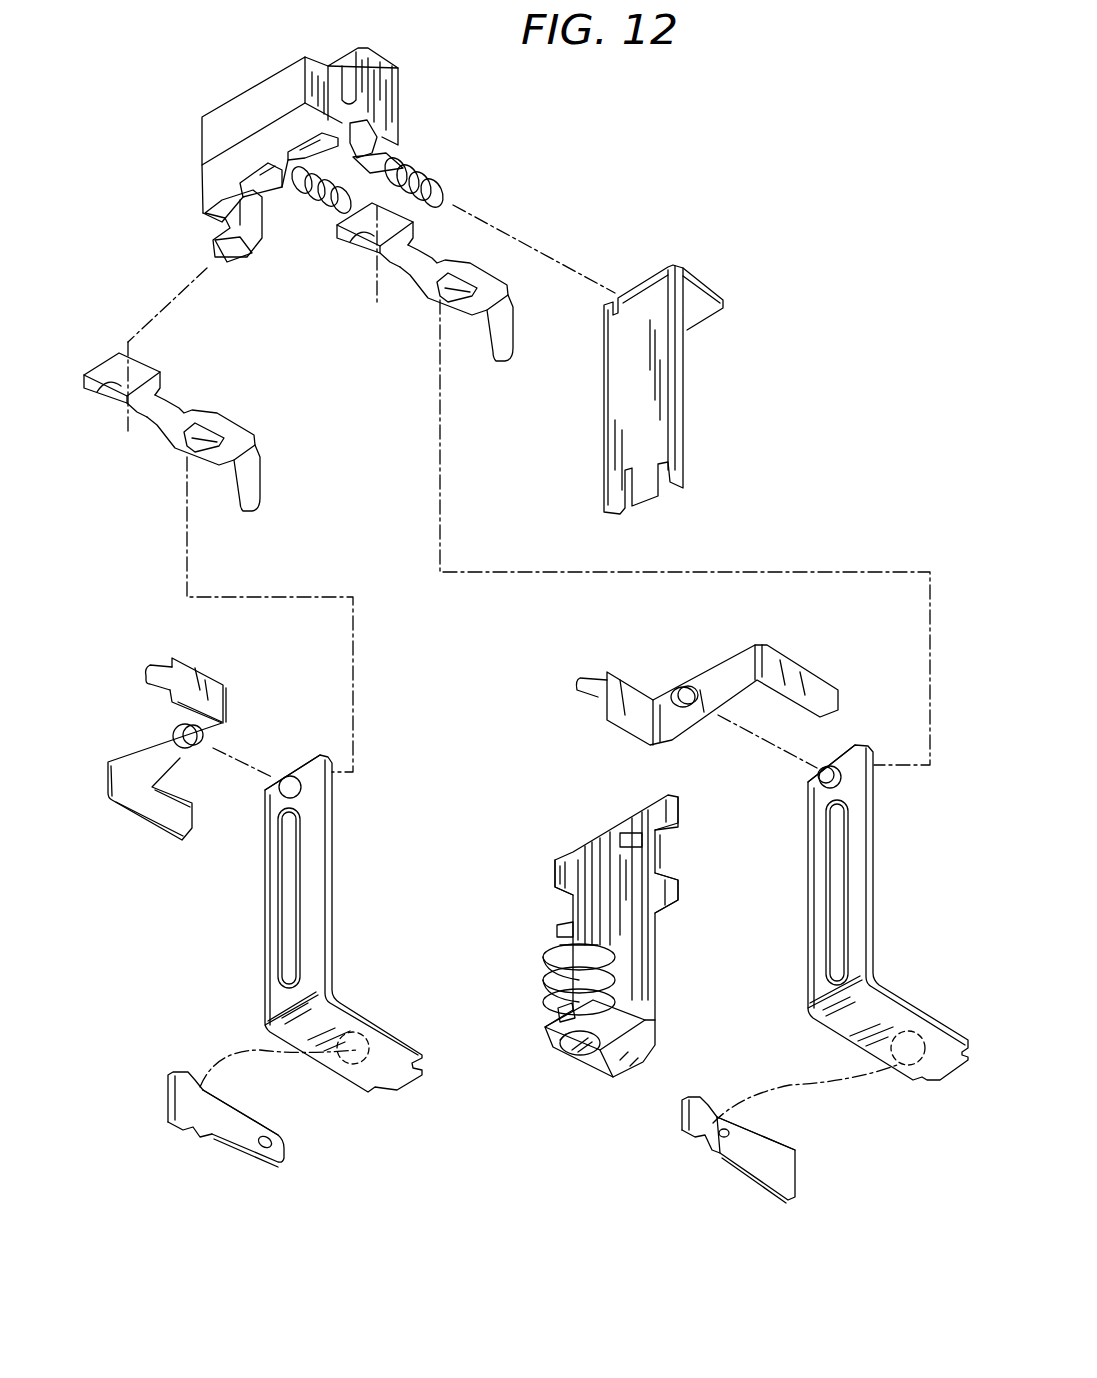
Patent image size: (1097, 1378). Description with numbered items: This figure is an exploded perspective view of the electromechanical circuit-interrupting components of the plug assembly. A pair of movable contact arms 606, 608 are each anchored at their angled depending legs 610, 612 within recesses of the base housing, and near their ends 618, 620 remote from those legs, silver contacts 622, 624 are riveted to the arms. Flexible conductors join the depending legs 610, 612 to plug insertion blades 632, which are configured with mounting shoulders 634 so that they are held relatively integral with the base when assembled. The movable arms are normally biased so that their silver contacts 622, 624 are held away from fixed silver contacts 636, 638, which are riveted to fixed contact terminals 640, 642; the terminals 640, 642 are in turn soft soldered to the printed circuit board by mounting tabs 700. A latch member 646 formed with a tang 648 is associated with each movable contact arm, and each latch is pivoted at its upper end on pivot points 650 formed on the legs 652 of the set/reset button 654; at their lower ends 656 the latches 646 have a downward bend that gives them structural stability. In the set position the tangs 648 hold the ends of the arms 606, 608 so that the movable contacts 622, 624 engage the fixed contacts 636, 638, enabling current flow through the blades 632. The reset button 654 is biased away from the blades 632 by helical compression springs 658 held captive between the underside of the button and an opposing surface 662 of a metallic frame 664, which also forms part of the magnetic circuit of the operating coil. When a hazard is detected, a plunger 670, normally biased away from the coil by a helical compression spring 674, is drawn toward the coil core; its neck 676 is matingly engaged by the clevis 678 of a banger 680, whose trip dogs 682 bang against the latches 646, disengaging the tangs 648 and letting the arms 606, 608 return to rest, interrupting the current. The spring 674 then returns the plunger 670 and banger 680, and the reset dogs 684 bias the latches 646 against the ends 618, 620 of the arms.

The movable contact arm 606 is at (332, 877).
The movable contact arm 608 is at (873, 873).
The angled depending leg 610 is at (370, 1035).
The angled depending leg 612 is at (892, 1018).
The end of movable arm 618 is at (308, 767).
The end of movable arm 620 is at (857, 757).
The silver contact 622 is at (275, 793).
The silver contact 624 is at (819, 775).
The plug insertion blade 632 is at (243, 1150).
The mounting shoulder 634 is at (198, 1137).
The fixed silver contact 636 is at (192, 750).
The fixed silver contact 638 is at (680, 690).
The fixed contact terminal 640 is at (153, 753).
The fixed contact terminal 642 is at (620, 685).
The latch member 646 is at (467, 262).
The tang 648 is at (440, 298).
The pivot point 650 is at (218, 231).
The leg of set/reset button 652 is at (228, 258).
The set/reset button 654 is at (327, 70).
The lower end of latch 656 is at (508, 364).
The helical compression spring 658 is at (318, 203).
The opposing surface 662 is at (663, 360).
The metallic frame 664 is at (617, 447).
The plunger 670 is at (600, 952).
The helical compression spring 674 is at (612, 980).
The neck 676 is at (556, 1015).
The clevis 678 is at (556, 1042).
The banger 680 is at (655, 1020).
The trip dog 682 is at (680, 883).
The reset dog 684 is at (678, 814).
The mounting tab 700 is at (145, 667).